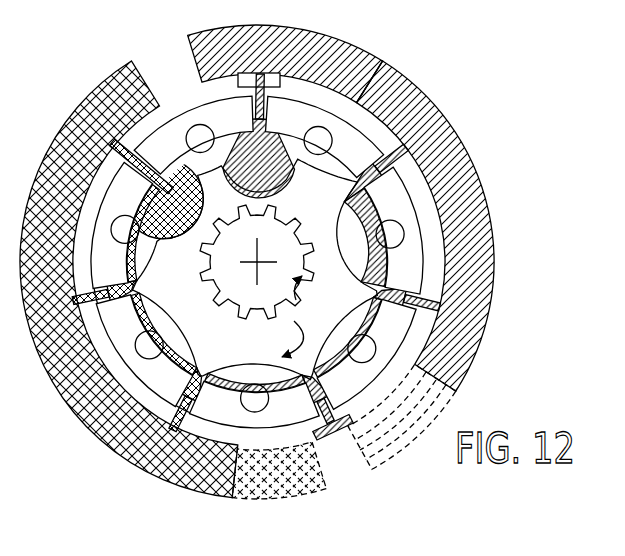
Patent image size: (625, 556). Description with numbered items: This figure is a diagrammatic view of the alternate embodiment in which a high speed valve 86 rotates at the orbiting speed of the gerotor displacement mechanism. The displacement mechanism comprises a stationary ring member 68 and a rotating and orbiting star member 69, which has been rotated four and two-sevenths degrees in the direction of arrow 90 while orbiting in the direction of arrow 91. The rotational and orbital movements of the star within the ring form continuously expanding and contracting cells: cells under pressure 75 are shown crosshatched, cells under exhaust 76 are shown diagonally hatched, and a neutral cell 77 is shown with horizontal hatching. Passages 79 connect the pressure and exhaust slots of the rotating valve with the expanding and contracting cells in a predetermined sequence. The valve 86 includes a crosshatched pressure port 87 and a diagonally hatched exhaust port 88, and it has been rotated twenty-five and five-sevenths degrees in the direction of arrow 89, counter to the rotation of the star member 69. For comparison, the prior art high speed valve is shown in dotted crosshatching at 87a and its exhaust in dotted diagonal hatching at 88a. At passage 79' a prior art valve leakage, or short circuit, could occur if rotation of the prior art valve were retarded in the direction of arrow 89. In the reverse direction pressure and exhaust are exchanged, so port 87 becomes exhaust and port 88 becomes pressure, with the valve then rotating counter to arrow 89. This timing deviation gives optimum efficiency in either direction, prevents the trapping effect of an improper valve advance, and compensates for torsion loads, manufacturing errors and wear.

The stationary ring member 68 is at (413, 230).
The star member 69 is at (228, 359).
The pressure cells 75 is at (160, 196).
The exhaust cells 76 is at (296, 158).
The neutral cell 77 is at (297, 389).
The passages 79 is at (256, 253).
The passage 79' is at (337, 408).
The valve 86 is at (362, 40).
The pressure port 87 is at (62, 157).
The prior art high speed valve pressure port 87a is at (318, 493).
The exhaust port 88 is at (433, 119).
The prior art exhaust port 88a is at (402, 441).
The arrow 89 is at (487, 354).
The arrow 90 is at (290, 323).
The arrow 91 is at (308, 293).